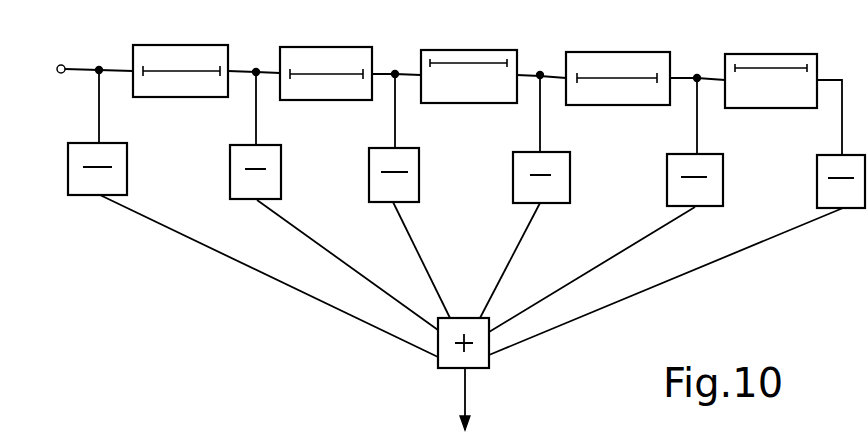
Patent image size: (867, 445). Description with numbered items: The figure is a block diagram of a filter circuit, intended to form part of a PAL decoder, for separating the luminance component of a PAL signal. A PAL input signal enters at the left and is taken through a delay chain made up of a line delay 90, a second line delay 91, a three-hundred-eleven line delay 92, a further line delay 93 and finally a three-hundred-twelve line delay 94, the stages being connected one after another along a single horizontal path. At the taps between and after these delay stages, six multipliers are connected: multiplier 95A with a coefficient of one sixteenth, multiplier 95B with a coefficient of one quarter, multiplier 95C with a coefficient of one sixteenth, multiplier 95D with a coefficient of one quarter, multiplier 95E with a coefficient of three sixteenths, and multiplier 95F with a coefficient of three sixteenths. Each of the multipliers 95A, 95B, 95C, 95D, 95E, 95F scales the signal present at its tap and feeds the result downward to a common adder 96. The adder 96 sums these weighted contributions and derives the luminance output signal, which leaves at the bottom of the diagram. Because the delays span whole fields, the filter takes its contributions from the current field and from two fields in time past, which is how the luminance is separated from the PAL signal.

The line delay 90 is at (180, 56).
The line delay 91 is at (326, 59).
The 311 line delay 92 is at (469, 61).
The line delay 93 is at (618, 65).
The 312 line delay 94 is at (771, 66).
The multiplier 95A is at (231, 215).
The multiplier 95B is at (312, 202).
The multiplier 95C is at (388, 197).
The multiplier 95D is at (521, 198).
The multiplier 95E is at (606, 206).
The multiplier 95F is at (677, 255).
The adder 96 is at (489, 362).